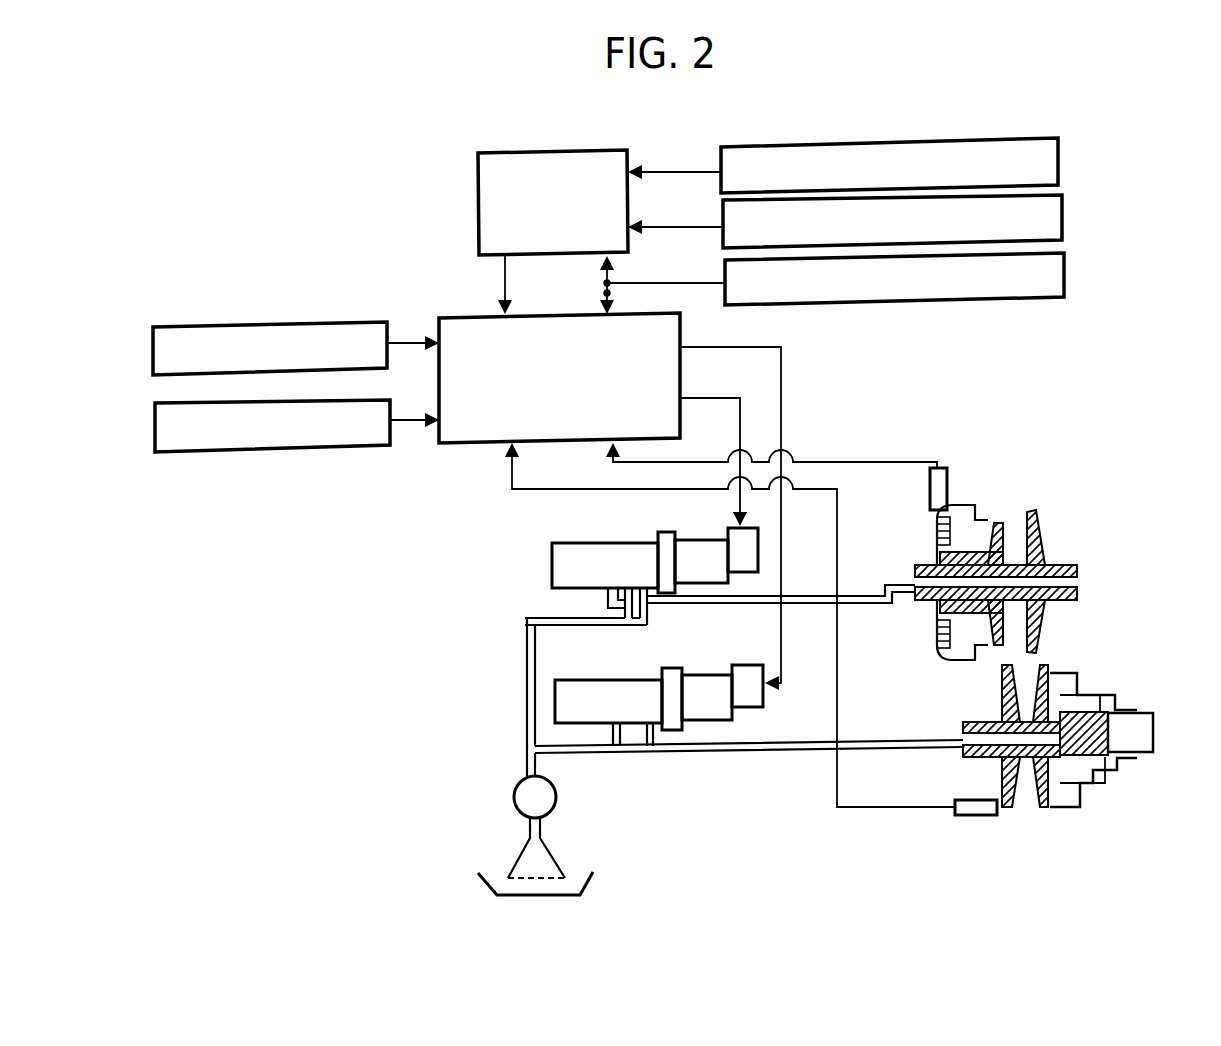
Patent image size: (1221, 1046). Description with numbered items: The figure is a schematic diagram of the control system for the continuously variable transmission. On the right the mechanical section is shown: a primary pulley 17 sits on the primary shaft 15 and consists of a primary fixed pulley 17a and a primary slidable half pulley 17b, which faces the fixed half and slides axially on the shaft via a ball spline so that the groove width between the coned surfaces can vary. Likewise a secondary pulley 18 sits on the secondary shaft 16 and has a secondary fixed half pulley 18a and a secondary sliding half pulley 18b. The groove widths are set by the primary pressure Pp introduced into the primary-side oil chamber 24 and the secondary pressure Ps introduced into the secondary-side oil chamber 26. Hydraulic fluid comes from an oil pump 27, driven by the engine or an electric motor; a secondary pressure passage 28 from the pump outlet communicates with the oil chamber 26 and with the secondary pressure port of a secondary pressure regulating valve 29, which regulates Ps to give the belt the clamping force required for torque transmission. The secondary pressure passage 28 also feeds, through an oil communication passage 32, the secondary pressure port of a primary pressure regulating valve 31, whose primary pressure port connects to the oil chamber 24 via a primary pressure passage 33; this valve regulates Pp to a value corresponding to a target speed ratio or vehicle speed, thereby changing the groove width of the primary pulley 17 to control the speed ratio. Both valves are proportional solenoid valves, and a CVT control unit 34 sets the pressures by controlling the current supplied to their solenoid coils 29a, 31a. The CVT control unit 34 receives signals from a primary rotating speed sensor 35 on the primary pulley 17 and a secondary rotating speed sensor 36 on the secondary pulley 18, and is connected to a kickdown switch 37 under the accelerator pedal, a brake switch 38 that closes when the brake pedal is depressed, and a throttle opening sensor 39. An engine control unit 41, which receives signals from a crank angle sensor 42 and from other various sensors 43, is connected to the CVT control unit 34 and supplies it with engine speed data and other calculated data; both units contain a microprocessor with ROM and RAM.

The primary shaft 15 is at (1077, 566).
The secondary shaft 16 is at (1153, 733).
The primary pulley 17 is at (1015, 554).
The primary fixed pulley 17a is at (1040, 522).
The primary slidable half pulley 17b is at (998, 528).
The secondary pulley 18 is at (1066, 746).
The secondary fixed half pulley 18a is at (1016, 810).
The secondary sliding half pulley 18b is at (1050, 672).
The oil chamber 24 is at (964, 508).
The oil chamber 26 is at (1072, 800).
The oil pump 27 is at (514, 795).
The secondary pressure passage 28 is at (752, 754).
The secondary pressure regulating valve 29 is at (704, 684).
The solenoid coil 29a is at (756, 670).
The primary pressure regulating valve 31 is at (552, 562).
The solenoid coil 31a is at (740, 540).
The oil communication passage 32 is at (525, 660).
The primary pressure passage 33 is at (895, 606).
The CVT control unit 34 is at (472, 317).
The primary rotating speed sensor 35 is at (930, 489).
The secondary rotating speed sensor 36 is at (978, 815).
The kickdown switch 37 is at (294, 325).
The brake switch 38 is at (300, 452).
The throttle opening sensor 39 is at (1066, 276).
The engine control unit 41 is at (478, 186).
The crank angle sensor 42 is at (1062, 163).
The various sensors 43 is at (1064, 220).